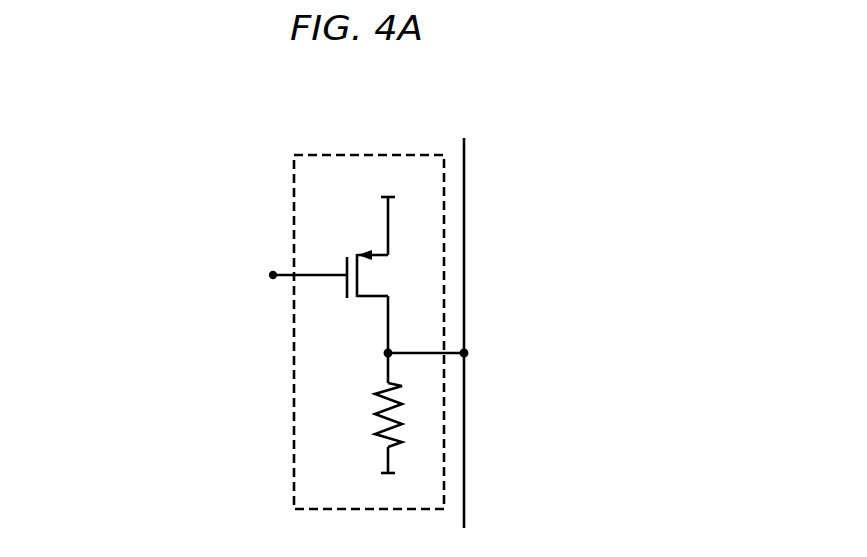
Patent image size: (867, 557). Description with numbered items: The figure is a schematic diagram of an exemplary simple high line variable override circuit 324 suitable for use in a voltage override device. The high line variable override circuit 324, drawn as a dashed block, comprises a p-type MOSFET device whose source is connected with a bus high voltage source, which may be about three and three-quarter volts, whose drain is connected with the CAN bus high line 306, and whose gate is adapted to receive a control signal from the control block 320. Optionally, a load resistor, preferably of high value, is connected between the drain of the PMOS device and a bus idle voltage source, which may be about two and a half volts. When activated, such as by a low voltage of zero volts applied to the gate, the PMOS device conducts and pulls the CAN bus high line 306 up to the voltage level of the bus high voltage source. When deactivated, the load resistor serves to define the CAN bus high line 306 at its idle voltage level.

The CAN bus high line 306 is at (463, 303).
The control block 320 is at (188, 271).
The high line variable override circuit 324 is at (294, 192).